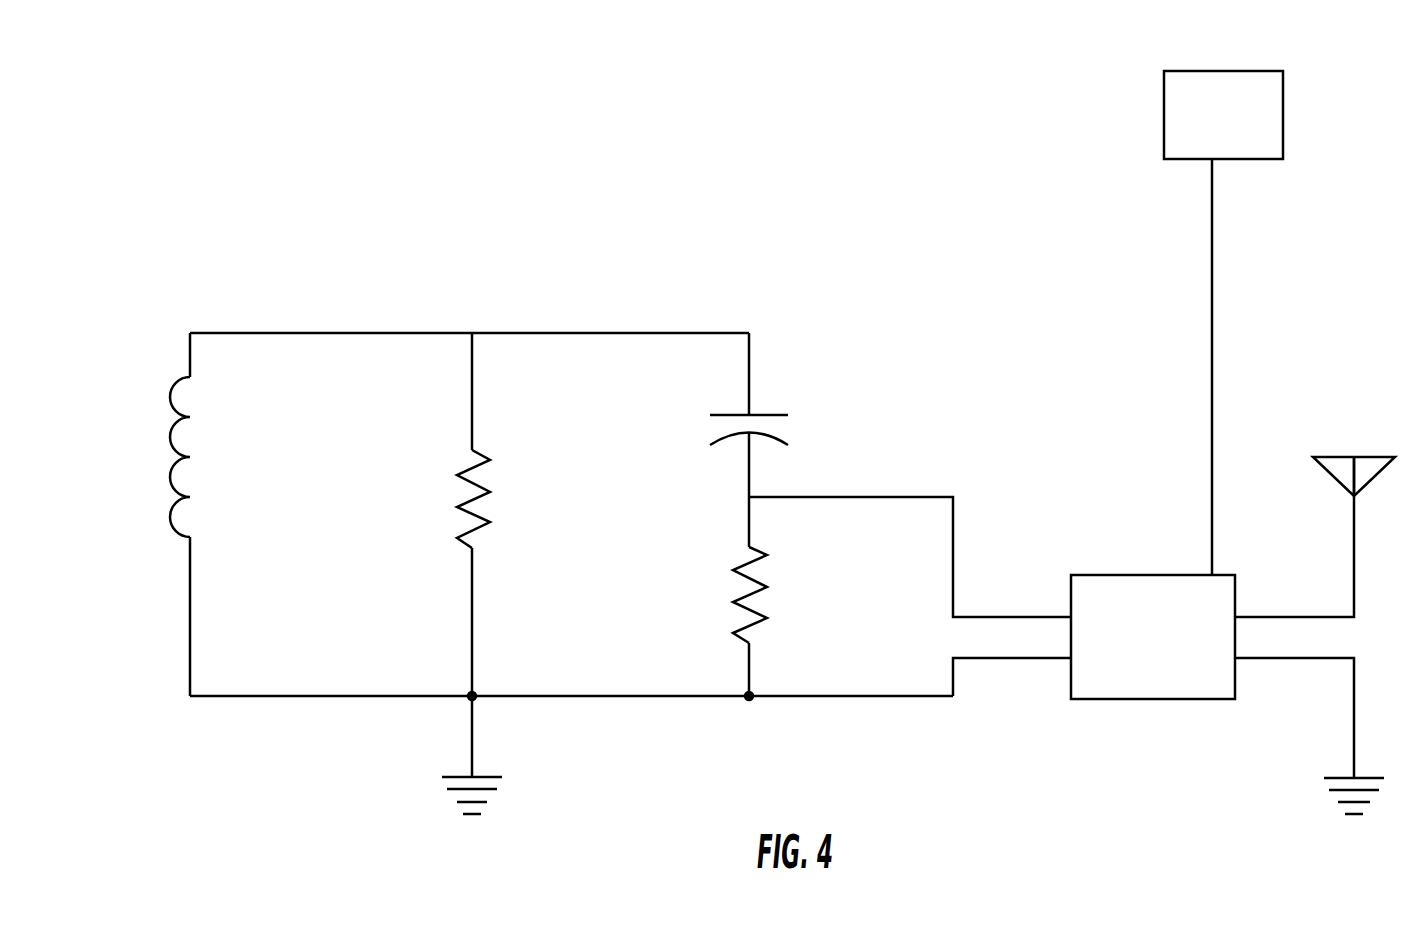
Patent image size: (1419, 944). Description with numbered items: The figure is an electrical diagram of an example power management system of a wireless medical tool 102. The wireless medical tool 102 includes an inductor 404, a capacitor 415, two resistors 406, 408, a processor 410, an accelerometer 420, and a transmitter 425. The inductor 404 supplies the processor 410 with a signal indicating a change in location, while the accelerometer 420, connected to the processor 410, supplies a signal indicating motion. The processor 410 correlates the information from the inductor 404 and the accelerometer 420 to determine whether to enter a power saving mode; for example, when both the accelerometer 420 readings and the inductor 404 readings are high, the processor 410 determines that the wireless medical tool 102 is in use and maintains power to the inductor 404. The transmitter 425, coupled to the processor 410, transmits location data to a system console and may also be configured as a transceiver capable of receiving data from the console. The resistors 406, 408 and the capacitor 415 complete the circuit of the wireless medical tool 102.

The wireless medical tool 102 is at (822, 208).
The inductor 404 is at (178, 382).
The resistor 406 is at (468, 470).
The resistor 408 is at (750, 628).
The processor 410 is at (1120, 575).
The capacitor 415 is at (770, 415).
The accelerometer 420 is at (1283, 118).
The transmitter 425 is at (1338, 457).